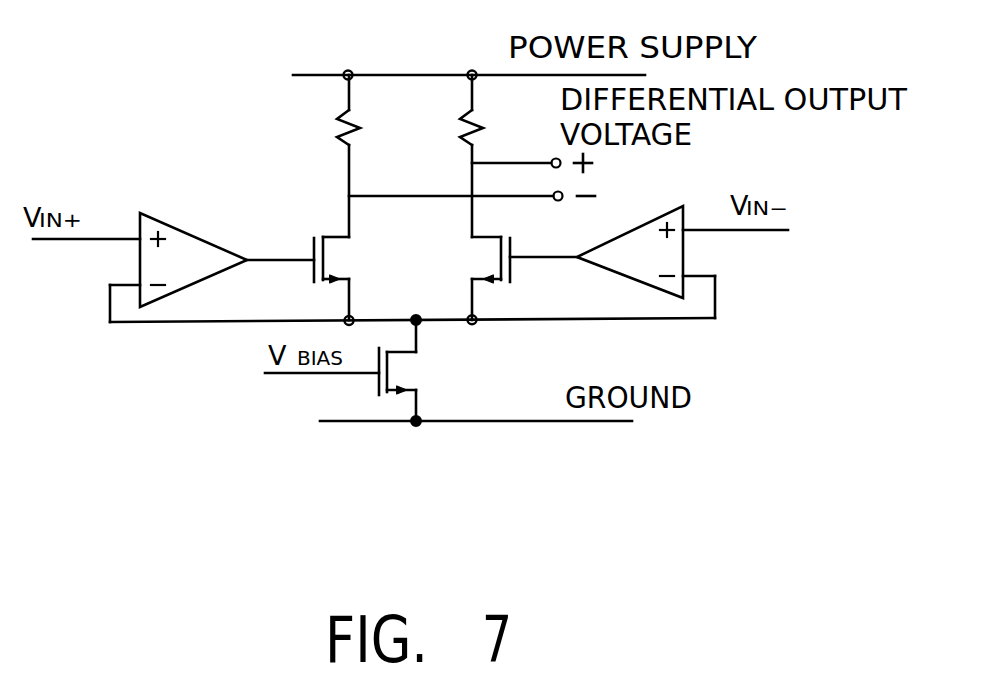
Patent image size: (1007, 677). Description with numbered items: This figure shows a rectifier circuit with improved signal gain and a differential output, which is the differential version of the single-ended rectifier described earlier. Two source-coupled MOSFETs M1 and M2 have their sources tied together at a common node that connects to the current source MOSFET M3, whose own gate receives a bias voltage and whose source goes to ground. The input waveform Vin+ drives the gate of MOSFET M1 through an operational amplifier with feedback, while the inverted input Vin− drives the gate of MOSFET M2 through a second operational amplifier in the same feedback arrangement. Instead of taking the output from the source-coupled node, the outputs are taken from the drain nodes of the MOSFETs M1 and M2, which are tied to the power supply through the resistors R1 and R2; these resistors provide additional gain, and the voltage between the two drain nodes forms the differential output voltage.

The resistor R1 is at (364, 112).
The resistor R2 is at (455, 112).
The source-coupled MOSFET M1 is at (317, 278).
The source-coupled MOSFET M2 is at (506, 278).
The current source MOSFET M3 is at (361, 370).